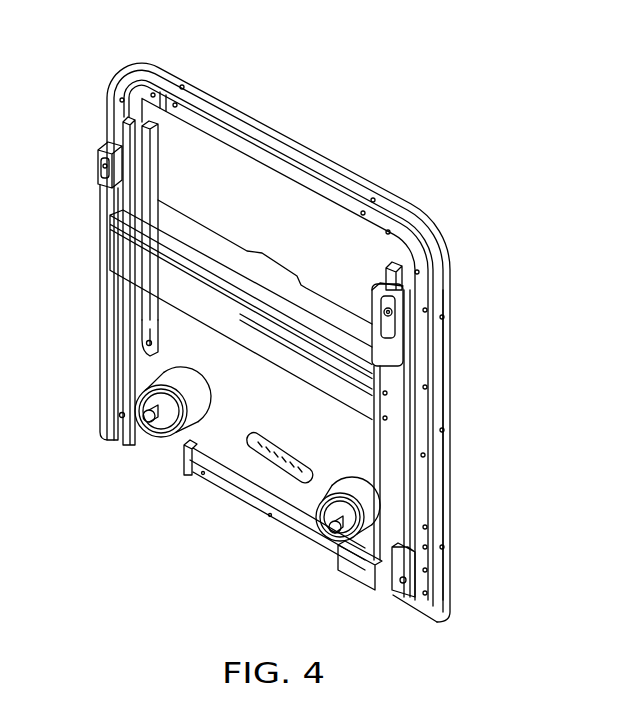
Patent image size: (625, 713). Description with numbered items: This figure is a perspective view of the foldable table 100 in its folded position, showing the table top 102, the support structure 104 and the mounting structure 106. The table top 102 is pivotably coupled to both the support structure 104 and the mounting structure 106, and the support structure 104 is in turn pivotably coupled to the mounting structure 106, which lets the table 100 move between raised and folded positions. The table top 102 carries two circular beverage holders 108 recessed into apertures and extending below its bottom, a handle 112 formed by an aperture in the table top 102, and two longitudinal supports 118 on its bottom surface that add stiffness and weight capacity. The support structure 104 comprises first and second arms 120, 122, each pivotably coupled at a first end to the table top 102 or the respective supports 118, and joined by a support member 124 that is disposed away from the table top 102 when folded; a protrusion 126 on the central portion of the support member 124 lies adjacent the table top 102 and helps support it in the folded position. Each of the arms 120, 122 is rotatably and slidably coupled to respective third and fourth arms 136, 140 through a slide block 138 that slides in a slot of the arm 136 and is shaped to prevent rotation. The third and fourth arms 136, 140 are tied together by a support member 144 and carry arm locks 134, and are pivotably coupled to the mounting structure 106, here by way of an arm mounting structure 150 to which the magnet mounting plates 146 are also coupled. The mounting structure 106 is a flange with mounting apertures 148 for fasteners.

The foldable table 100 is at (378, 113).
The table top 102 is at (265, 205).
The support structure 104 is at (407, 383).
The mounting structure 106 is at (137, 80).
The beverage holder 108 is at (157, 430).
The handle 112 is at (268, 460).
The support 118 is at (148, 357).
The first arm 120 is at (130, 298).
The second arm 122 is at (402, 272).
The support member 124 is at (197, 238).
The protrusion 126 is at (277, 262).
The arm lock 134 is at (98, 170).
The third arm 136 is at (112, 333).
The slide block 138 is at (393, 320).
The fourth arm 140 is at (392, 462).
The support member 144 is at (367, 421).
The magnet mounting plate 146 is at (177, 457).
The mounting aperture 148 is at (444, 313).
The arm mounting structure 150 is at (220, 483).